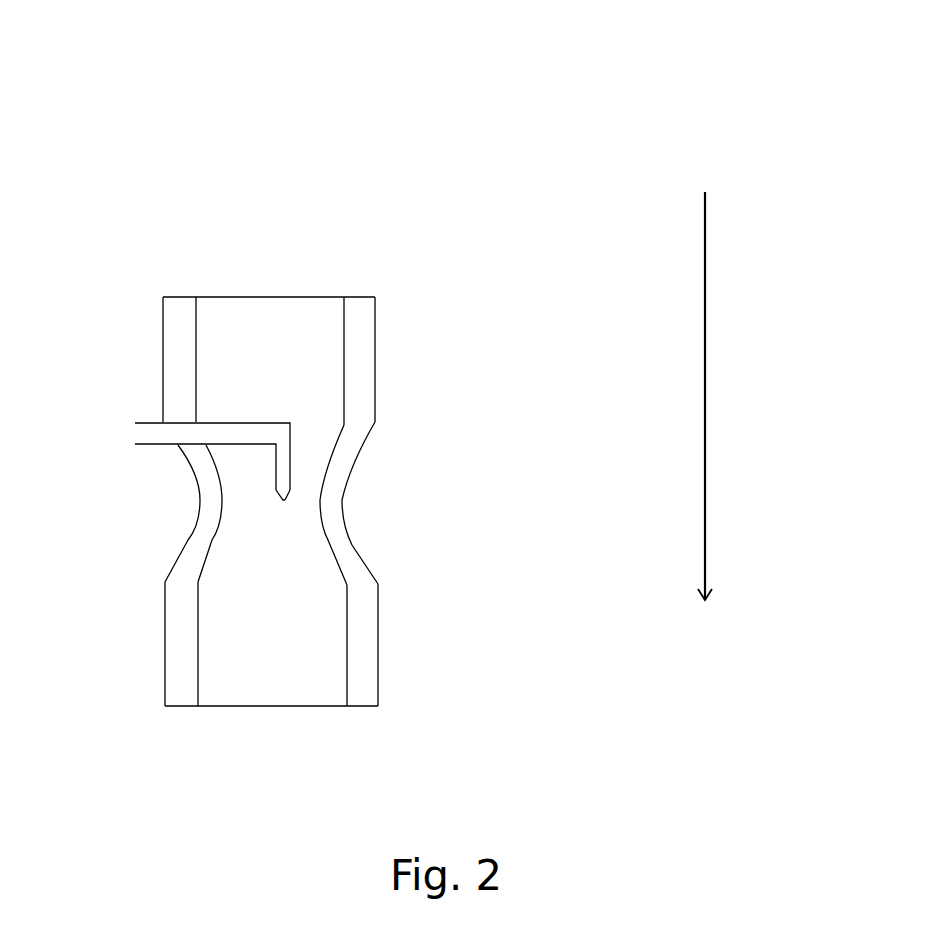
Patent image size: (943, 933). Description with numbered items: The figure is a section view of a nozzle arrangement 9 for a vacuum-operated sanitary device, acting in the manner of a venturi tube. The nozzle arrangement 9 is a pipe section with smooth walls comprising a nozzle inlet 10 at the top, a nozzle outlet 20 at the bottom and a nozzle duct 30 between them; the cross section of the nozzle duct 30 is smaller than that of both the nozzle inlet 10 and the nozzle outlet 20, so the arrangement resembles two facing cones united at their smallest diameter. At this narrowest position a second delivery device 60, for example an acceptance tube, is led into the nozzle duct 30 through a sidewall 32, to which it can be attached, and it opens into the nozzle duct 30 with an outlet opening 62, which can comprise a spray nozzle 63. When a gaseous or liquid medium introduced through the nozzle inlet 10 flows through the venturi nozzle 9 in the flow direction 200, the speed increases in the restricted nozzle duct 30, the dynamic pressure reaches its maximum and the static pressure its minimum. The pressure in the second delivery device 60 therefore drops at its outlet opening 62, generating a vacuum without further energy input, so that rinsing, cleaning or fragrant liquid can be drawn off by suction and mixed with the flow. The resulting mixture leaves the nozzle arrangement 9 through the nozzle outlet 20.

The nozzle arrangement 9 is at (350, 166).
The nozzle inlet 10 is at (276, 335).
The nozzle outlet 20 is at (261, 669).
The nozzle duct 30 is at (262, 540).
The sidewall 32 is at (187, 471).
The second delivery device 60 is at (161, 421).
The outlet opening 62 is at (292, 503).
The spray nozzle 63 is at (289, 497).
The flow direction 200 is at (707, 410).